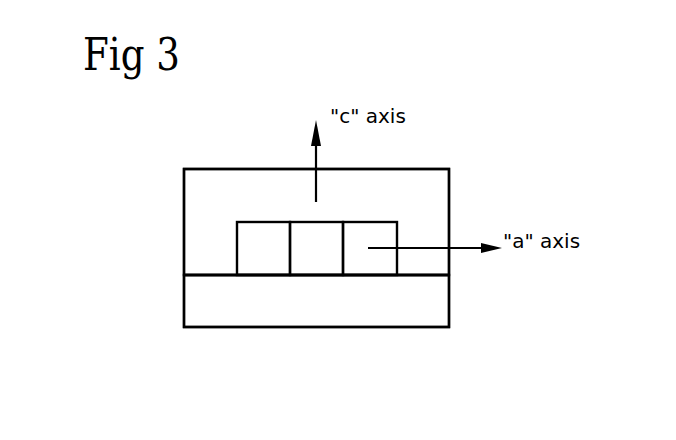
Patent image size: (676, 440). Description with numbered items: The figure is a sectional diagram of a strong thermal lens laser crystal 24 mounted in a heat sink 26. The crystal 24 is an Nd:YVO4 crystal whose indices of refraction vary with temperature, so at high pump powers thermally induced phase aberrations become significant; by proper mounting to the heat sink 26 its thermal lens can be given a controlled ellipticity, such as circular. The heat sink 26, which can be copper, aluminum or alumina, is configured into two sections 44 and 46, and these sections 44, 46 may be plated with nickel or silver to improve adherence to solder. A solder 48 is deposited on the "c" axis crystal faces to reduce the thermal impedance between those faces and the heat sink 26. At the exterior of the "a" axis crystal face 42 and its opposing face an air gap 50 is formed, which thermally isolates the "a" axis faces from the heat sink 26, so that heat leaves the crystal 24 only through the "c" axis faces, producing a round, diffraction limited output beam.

The strong thermal lens laser crystal 24 is at (314, 249).
The heat sink 26 is at (486, 181).
The "a" axis crystal face 42 is at (345, 260).
The heat sink section 44 is at (345, 298).
The heat sink section 46 is at (210, 228).
The solder 48 is at (212, 278).
The air gap 50 is at (263, 248).